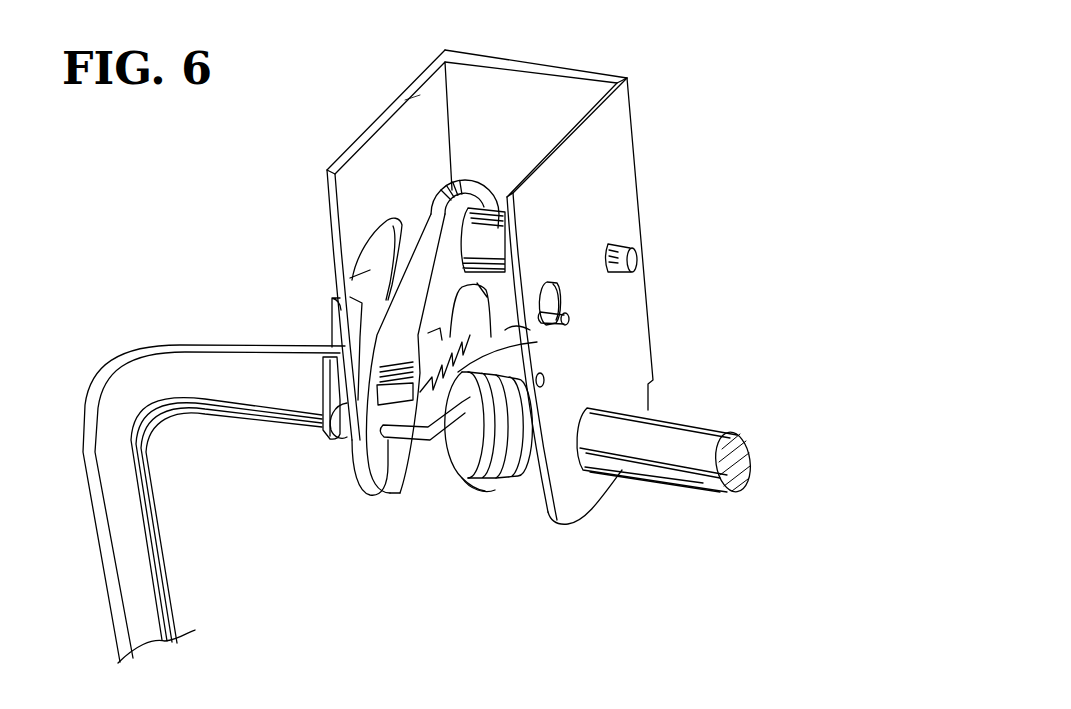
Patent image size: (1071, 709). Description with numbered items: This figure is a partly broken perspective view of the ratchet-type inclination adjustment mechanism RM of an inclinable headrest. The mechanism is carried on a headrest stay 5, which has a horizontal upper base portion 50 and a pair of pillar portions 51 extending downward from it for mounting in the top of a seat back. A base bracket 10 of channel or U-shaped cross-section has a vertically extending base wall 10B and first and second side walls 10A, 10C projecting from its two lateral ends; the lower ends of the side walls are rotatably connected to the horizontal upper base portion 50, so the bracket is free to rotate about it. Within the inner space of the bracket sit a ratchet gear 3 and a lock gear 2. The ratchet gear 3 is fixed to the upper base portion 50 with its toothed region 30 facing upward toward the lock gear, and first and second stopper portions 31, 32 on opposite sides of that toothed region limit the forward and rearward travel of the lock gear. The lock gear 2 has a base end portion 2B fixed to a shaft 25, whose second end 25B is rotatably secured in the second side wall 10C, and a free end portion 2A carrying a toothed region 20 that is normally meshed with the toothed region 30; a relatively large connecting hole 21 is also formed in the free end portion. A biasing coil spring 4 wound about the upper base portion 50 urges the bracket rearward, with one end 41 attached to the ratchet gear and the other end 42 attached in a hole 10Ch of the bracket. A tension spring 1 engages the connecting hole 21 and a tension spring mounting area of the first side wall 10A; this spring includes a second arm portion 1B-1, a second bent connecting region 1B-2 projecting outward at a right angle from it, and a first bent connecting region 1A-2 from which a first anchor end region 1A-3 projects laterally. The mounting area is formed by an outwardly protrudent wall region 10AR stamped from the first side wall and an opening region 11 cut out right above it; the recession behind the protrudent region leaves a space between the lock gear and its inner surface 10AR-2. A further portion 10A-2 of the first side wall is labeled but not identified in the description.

The tension spring 1 is at (272, 407).
The first bent connecting region 1A-2 is at (378, 298).
The first anchor end region 1A-3 is at (438, 335).
The second arm portion 1B-1 is at (323, 388).
The second bent connecting region 1B-2 is at (325, 352).
The lock gear 2 is at (489, 358).
The free end portion 2A is at (382, 497).
The base end portion 2B is at (468, 181).
The ratchet gear 3 is at (462, 475).
The biasing coil spring 4 is at (497, 453).
The headrest stay 5 is at (214, 504).
The pillar portion 51 is at (150, 529).
The base bracket 10 is at (478, 281).
The first side wall 10A is at (335, 298).
The side plate portion 10A-2 is at (416, 135).
The outwardly protrudent wall region 10AR is at (333, 317).
The inner surface of the outwardly protrudent region 10AR-2 is at (377, 470).
The base wall 10B is at (540, 64).
The second side wall 10C is at (621, 299).
The hole 10Ch is at (572, 300).
The opening region 11 is at (372, 262).
The toothed region 20 is at (450, 480).
The connecting hole 21 is at (520, 365).
The shaft 25 is at (487, 215).
The second end 25B is at (637, 258).
The toothed region 30 is at (525, 340).
The first stopper portion 31 is at (413, 490).
The second stopper portion 32 is at (490, 297).
The one end of biasing coil spring 41 is at (388, 442).
The other end of biasing coil spring 42 is at (570, 318).
The horizontal upper base portion 50 is at (652, 466).
The ratchet-type inclination adjustment mechanism RM is at (290, 180).